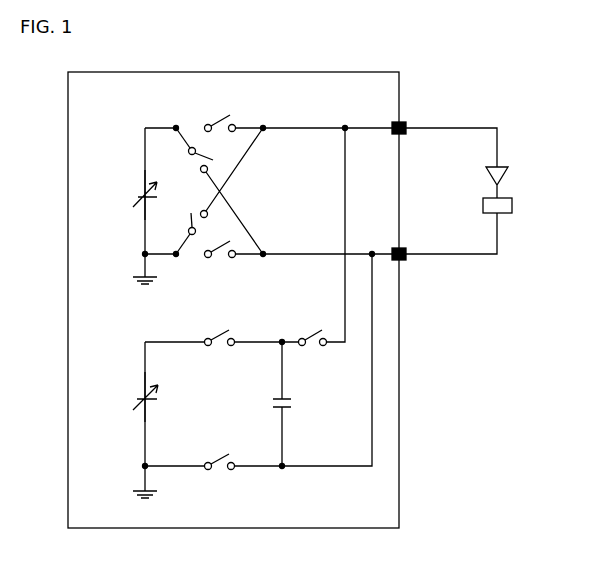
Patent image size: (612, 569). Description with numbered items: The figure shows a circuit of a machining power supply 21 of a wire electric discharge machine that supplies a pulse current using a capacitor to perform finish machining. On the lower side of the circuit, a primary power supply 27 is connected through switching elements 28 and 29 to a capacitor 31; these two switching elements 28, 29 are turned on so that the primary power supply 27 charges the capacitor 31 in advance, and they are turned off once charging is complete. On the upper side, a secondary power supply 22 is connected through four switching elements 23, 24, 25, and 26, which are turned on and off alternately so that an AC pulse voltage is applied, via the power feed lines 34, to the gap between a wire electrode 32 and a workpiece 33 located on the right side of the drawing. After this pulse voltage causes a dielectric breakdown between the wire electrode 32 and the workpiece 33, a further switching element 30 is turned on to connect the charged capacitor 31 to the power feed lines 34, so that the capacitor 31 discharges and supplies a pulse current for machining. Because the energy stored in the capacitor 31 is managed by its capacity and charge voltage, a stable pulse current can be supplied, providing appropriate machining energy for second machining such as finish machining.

The machining power supply 21 is at (68, 250).
The secondary power supply 22 is at (140, 196).
The switching element 23 is at (218, 123).
The switching element 24 is at (218, 258).
The switching element 25 is at (197, 152).
The switching element 26 is at (191, 214).
The primary power supply 27 is at (140, 399).
The switching element 28 is at (222, 352).
The switching element 29 is at (217, 460).
The switching element 30 is at (313, 352).
The capacitor 31 is at (295, 405).
The wire electrode 32 is at (512, 176).
The workpiece 33 is at (512, 206).
The power feed lines 34 is at (442, 128).